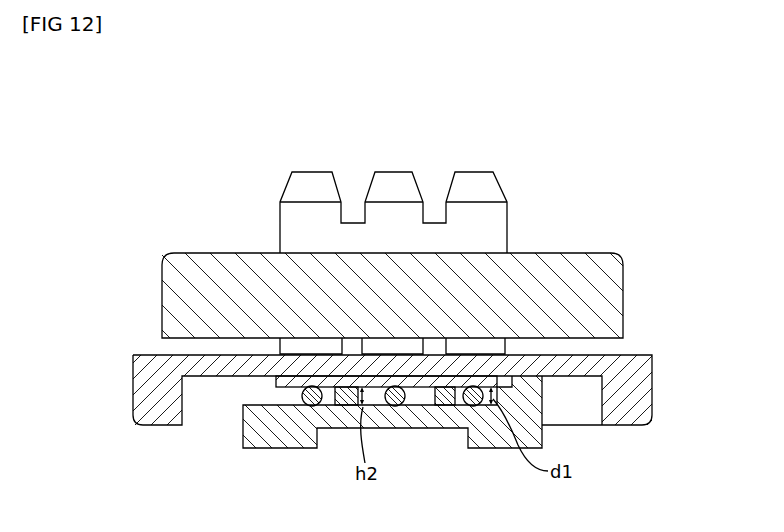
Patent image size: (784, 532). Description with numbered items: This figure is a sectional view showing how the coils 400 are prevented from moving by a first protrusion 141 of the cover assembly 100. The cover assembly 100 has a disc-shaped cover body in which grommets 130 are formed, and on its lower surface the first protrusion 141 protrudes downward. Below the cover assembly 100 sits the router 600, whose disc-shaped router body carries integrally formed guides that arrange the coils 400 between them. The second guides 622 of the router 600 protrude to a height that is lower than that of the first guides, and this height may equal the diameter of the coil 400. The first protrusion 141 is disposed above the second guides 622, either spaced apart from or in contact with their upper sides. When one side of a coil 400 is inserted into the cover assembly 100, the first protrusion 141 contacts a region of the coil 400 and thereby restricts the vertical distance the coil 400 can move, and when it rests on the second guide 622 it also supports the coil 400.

The cover assembly 100 is at (657, 286).
The grommets 130 is at (475, 183).
The first protrusion 141 is at (415, 378).
The coils 400 is at (306, 407).
The router 600 is at (562, 438).
The second guides 622 is at (346, 406).